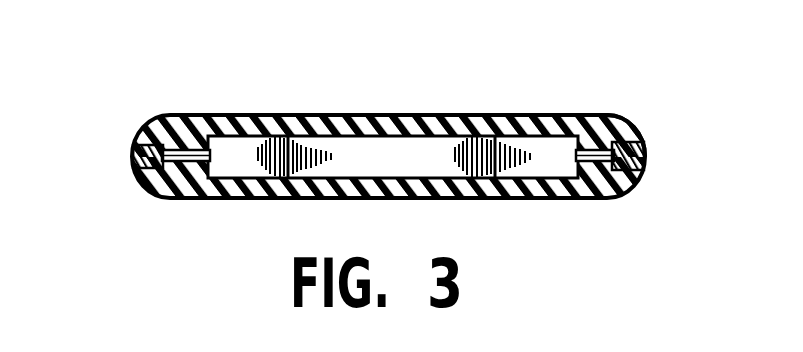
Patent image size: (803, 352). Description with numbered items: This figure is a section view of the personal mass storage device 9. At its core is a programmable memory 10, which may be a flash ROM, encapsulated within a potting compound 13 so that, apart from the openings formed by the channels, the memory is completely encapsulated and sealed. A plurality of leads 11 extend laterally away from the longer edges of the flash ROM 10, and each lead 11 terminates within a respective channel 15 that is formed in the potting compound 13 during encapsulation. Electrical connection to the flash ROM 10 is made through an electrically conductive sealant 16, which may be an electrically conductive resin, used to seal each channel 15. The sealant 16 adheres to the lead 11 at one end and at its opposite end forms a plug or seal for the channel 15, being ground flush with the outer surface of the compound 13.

The personal mass storage device 9 is at (415, 126).
The programmable memory 10 is at (402, 150).
The leads 11 is at (183, 148).
The potting compound 13 is at (560, 197).
The channel 15 is at (645, 138).
The electrically conductive sealant 16 is at (133, 170).